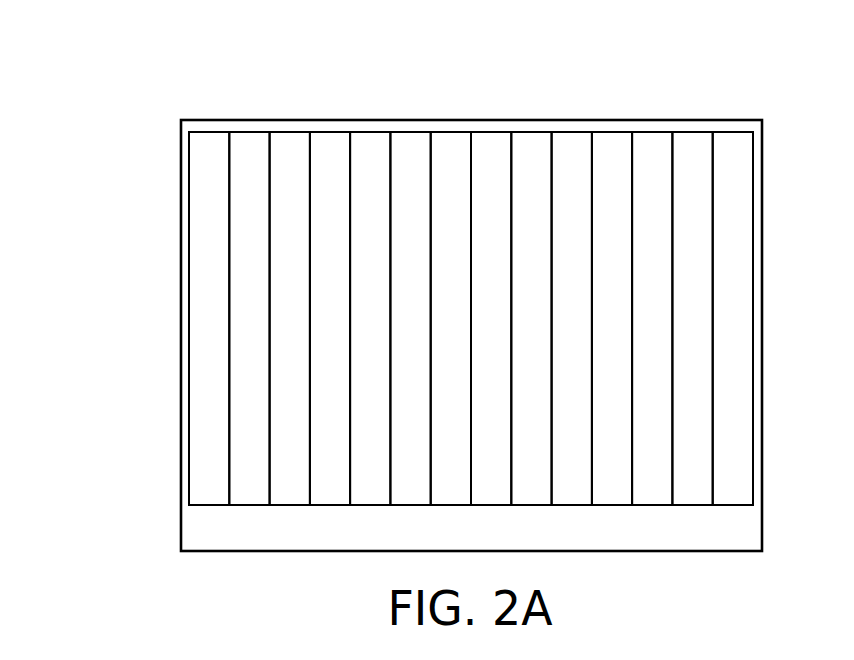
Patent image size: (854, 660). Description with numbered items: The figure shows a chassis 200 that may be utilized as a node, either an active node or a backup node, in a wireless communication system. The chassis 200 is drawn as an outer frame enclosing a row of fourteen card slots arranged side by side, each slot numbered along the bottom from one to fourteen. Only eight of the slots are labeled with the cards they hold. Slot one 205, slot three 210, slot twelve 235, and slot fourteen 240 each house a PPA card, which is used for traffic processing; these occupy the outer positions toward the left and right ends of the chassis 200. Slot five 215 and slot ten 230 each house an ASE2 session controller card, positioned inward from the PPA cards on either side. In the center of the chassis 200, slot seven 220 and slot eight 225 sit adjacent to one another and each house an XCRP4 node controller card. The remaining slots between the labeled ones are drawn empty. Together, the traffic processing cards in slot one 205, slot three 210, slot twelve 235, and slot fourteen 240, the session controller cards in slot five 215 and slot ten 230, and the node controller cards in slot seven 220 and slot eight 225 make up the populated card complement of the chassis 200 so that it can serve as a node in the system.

The chassis 200 is at (53, 102).
The slot 1 205 is at (209, 132).
The slot 3 210 is at (290, 132).
The slot 5 215 is at (370, 132).
The slot 7 220 is at (451, 132).
The slot 8 225 is at (491, 132).
The slot 10 230 is at (572, 132).
The slot 12 235 is at (652, 132).
The slot 14 240 is at (733, 132).